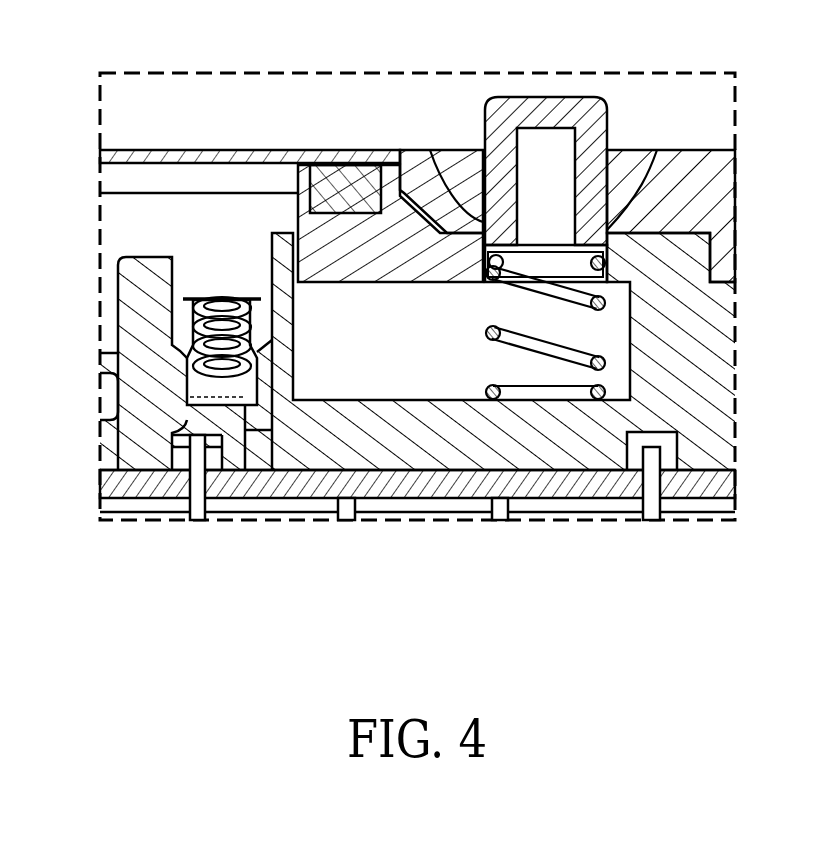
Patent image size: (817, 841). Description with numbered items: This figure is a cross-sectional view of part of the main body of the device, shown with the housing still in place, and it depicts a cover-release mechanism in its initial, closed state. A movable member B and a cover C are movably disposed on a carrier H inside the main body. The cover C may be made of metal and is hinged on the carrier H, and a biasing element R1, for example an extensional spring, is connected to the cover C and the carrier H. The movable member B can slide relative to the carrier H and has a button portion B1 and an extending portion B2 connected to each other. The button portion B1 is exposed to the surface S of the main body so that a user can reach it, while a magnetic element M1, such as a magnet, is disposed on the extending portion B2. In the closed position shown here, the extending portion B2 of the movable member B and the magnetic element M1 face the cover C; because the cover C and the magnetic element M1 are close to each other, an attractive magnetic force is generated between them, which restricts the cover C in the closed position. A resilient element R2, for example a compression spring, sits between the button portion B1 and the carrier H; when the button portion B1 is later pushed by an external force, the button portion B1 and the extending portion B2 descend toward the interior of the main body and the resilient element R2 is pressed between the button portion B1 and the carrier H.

The cover C is at (122, 152).
The magnetic element M1 is at (350, 192).
The extending portion B2 is at (387, 227).
The button portion B1 is at (549, 118).
The movable member B is at (470, 147).
The surface S is at (726, 149).
The carrier H is at (727, 307).
The biasing element R1 is at (194, 328).
The resilient element R2 is at (606, 362).